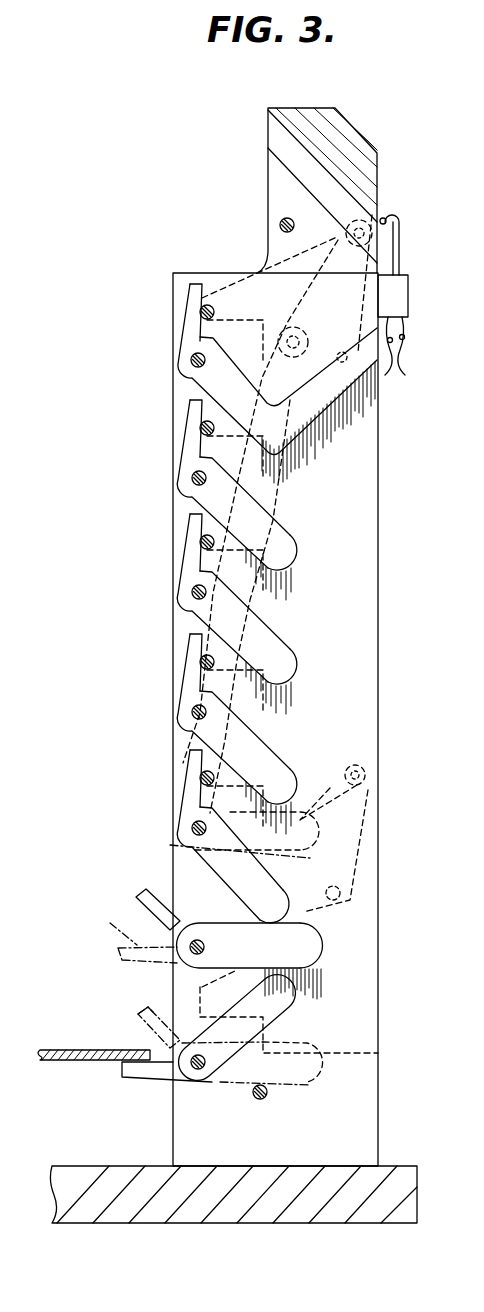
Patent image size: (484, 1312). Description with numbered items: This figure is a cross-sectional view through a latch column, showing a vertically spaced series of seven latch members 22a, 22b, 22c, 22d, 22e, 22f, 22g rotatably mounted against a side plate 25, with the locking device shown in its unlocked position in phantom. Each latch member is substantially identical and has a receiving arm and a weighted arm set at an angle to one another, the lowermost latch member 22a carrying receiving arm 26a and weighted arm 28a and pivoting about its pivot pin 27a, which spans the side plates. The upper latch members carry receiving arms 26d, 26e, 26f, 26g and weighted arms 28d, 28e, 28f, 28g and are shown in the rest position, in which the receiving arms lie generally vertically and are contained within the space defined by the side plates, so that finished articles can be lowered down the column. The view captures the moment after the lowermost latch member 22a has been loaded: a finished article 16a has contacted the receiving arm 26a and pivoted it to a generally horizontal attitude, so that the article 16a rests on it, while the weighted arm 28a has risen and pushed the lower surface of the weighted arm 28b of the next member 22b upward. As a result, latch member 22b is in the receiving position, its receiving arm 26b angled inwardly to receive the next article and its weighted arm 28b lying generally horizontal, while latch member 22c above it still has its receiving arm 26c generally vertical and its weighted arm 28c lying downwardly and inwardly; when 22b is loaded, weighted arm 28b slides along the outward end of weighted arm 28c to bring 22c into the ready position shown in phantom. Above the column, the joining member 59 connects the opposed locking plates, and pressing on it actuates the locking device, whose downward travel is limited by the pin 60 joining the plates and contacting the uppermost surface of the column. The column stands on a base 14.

The base plate 14 is at (78, 1168).
The finished article 16a is at (62, 1050).
The side plate 25 is at (362, 430).
The joining member 59 is at (343, 135).
The pin 60 is at (285, 218).
The lowermost latch member 22a is at (283, 1008).
The latch member 22b is at (297, 958).
The latch member 22c is at (180, 837).
The latch member 22d is at (190, 730).
The latch member 22e is at (195, 610).
The latch member 22f is at (195, 497).
The latch member 22g is at (193, 385).
The receiving arm 26a is at (130, 1070).
The receiving arm 26b is at (140, 903).
The receiving arm 26c is at (190, 755).
The receiving arm 26d is at (190, 662).
The receiving arm 26e is at (187, 537).
The receiving arm 26f is at (187, 425).
The receiving arm 26g is at (185, 302).
The pivot pin 27a is at (202, 1068).
The weighted arm 28a is at (308, 1070).
The weighted arm 28b is at (317, 943).
The weighted arm 28c is at (300, 805).
The weighted arm 28d is at (270, 767).
The weighted arm 28e is at (280, 650).
The weighted arm 28f is at (282, 547).
The weighted arm 28g is at (238, 392).